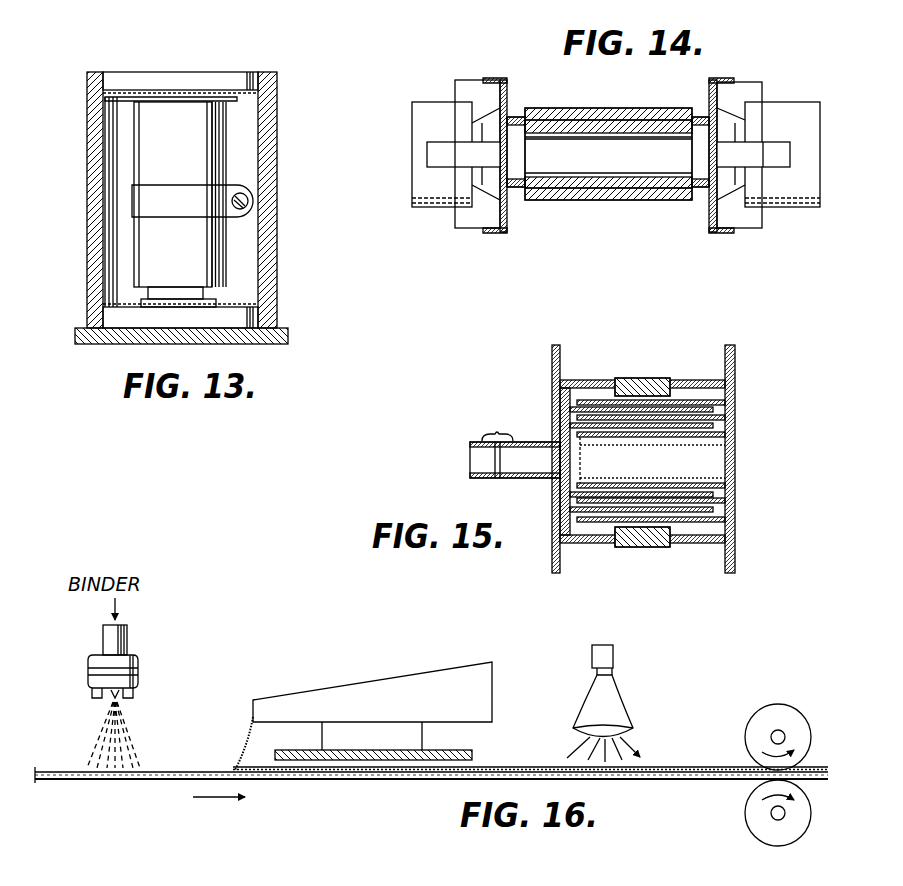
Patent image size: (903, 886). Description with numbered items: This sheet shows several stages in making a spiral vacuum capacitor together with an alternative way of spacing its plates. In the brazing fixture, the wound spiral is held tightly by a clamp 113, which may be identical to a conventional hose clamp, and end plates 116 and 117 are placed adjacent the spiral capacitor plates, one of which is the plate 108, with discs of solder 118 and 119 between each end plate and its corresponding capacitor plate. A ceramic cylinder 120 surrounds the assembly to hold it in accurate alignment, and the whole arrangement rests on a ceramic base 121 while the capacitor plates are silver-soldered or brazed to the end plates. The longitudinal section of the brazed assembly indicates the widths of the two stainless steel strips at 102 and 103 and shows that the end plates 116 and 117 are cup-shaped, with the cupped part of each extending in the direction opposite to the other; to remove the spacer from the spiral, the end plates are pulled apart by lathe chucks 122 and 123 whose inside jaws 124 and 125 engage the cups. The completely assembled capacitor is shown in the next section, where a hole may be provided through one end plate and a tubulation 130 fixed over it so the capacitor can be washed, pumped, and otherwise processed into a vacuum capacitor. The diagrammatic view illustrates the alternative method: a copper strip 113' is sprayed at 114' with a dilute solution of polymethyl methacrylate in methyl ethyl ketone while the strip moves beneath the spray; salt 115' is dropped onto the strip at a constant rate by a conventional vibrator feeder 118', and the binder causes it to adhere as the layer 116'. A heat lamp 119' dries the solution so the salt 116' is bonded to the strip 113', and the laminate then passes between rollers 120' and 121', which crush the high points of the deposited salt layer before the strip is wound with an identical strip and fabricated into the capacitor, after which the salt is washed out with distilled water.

In FIG. 14, the stainless steel strip width 102 is at (692, 110).
In FIG. 14, the stainless steel strip width 103 is at (513, 127).
In FIG. 13, the capacitor plate 108 is at (148, 295).
In FIG. 13, the clamp 113 is at (145, 202).
In FIG. 13, the end plate 116 is at (180, 186).
In FIG. 14, the end plate 116 is at (487, 136).
In FIG. 15, the end plate 116 is at (523, 459).
In FIG. 16, the end plate 116 is at (431, 795).
In FIG. 14, the end plate 117 is at (718, 78).
In FIG. 15, the end plate 117 is at (735, 388).
In FIG. 16, the end plate 117 is at (215, 797).
In FIG. 13, the solder disc 118 is at (274, 201).
In FIG. 13, the solder disc 119 is at (137, 202).
In FIG. 13, the ceramic cylinder 120 is at (155, 200).
In FIG. 13, the ceramic base 121 is at (160, 349).
In FIG. 14, the lathe chuck 122 is at (447, 220).
In FIG. 14, the lathe chuck 123 is at (785, 224).
In FIG. 14, the inside jaws 124 is at (477, 222).
In FIG. 14, the inside jaws 125 is at (743, 222).
In FIG. 15, the tubulation 130 is at (533, 478).
In FIG. 16, the copper strip 113' is at (431, 795).
In FIG. 16, the spray 114' is at (83, 696).
In FIG. 16, the salt 115' is at (218, 742).
In FIG. 16, the adhered salt layer 116' is at (530, 739).
In FIG. 16, the vibrator feeder 118' is at (372, 698).
In FIG. 16, the heat lamp 119' is at (632, 703).
In FIG. 16, the roller 120' is at (792, 713).
In FIG. 16, the roller 121' is at (746, 813).